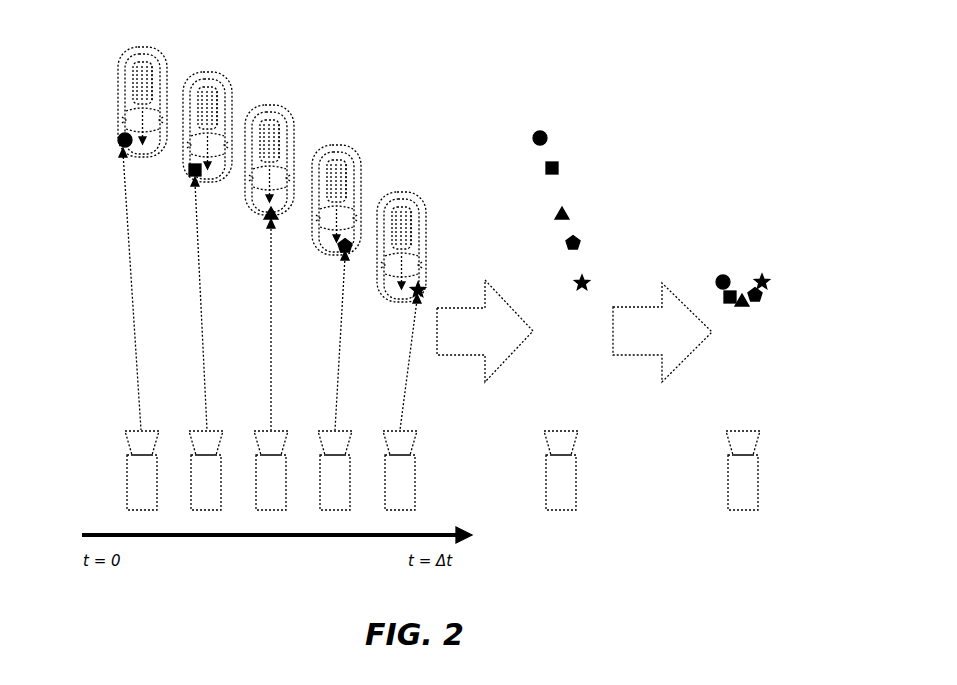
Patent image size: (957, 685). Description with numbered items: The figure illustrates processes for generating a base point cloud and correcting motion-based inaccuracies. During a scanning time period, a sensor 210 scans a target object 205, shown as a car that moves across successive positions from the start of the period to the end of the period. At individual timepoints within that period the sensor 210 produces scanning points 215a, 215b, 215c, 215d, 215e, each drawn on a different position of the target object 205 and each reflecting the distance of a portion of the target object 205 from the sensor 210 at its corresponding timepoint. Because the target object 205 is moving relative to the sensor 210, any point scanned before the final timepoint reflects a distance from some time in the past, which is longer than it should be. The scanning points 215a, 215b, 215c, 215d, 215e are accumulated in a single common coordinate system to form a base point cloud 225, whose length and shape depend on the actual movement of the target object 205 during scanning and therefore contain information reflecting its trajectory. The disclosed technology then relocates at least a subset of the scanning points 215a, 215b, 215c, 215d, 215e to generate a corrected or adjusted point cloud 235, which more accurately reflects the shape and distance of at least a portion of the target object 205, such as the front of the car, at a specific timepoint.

The target object 205 is at (140, 73).
The sensor 210 is at (127, 460).
The scanning point 215a is at (122, 146).
The scanning point 215b is at (192, 178).
The scanning point 215c is at (266, 224).
The scanning point 215d is at (340, 256).
The scanning point 215e is at (412, 297).
The base point cloud 225 is at (585, 118).
The corrected or adjusted point cloud 235 is at (765, 255).